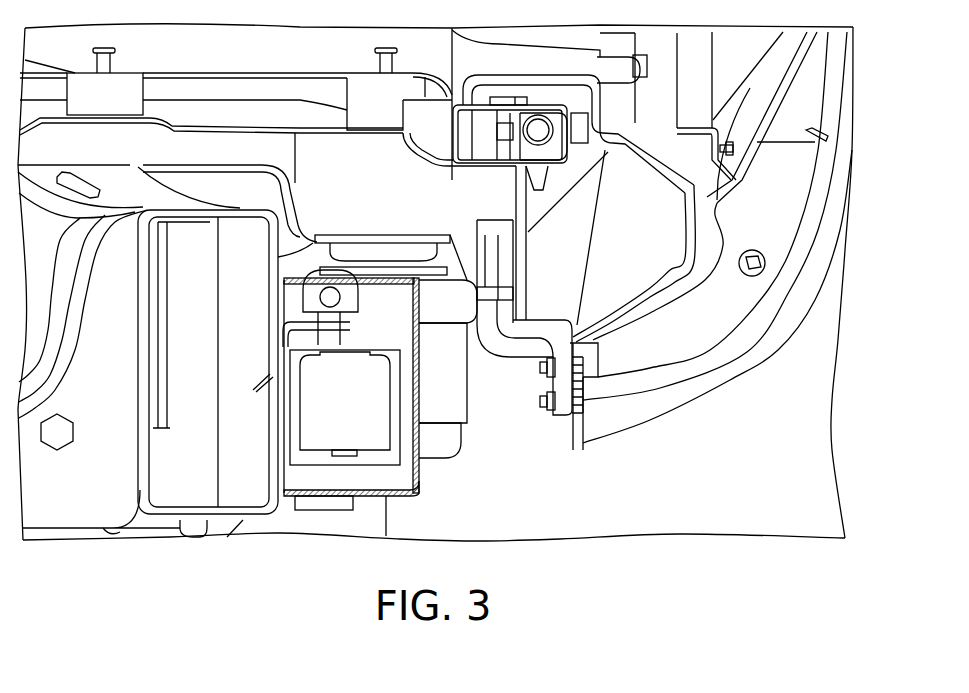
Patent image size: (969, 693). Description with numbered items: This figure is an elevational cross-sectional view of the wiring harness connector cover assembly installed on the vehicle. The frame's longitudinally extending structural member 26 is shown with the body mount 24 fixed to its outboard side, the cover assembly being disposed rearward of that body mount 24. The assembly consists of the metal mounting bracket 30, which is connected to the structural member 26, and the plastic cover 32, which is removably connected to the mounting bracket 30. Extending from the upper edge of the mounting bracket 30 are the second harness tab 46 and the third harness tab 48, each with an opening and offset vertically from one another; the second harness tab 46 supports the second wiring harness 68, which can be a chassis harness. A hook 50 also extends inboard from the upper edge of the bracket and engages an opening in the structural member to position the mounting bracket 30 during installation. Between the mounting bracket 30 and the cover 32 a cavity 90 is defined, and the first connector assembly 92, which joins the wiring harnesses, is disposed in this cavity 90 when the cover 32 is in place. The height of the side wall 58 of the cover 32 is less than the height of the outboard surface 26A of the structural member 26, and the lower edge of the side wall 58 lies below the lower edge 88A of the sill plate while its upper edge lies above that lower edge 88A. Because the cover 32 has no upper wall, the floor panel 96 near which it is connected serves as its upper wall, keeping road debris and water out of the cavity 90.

The structural member 26 is at (190, 207).
The outboard surface 26A is at (314, 238).
The mounting bracket 30 is at (278, 307).
The third harness tab 48 is at (277, 340).
The hook 50 is at (267, 373).
The second harness tab 46 is at (350, 348).
The floor panel 96 is at (385, 235).
The body mount 24 is at (470, 378).
The side wall 58 is at (420, 468).
The cover 32 is at (417, 493).
The first connector assembly 92 is at (318, 450).
The cavity 90 is at (367, 473).
The lower edge of the sill plate 88A is at (584, 441).
The second wiring harness 68 is at (727, 383).